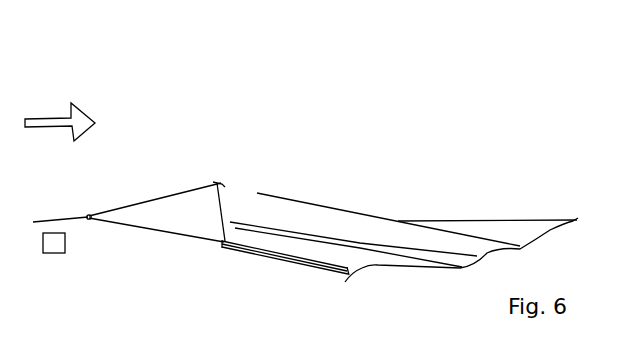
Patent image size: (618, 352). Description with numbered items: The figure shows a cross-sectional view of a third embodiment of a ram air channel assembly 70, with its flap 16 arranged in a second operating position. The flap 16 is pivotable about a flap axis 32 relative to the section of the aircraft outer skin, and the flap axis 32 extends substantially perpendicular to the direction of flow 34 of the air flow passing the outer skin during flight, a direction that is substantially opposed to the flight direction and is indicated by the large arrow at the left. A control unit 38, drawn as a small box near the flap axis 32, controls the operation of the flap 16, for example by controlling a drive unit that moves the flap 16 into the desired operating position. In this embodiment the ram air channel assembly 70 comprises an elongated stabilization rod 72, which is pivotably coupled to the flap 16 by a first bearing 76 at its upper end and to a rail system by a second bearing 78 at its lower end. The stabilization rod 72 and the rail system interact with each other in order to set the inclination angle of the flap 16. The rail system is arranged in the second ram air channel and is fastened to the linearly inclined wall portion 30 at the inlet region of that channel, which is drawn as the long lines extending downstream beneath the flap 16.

The flap 16 is at (153, 198).
The linearly inclined wall portion 30 is at (140, 239).
The flap axis 32 is at (89, 220).
The direction of flow 34 is at (52, 118).
The control unit 38 is at (57, 253).
The ram air channel assembly 70 is at (275, 88).
The elongated stabilization rod 72 is at (210, 218).
The first bearing 76 is at (222, 190).
The second bearing 78 is at (235, 251).